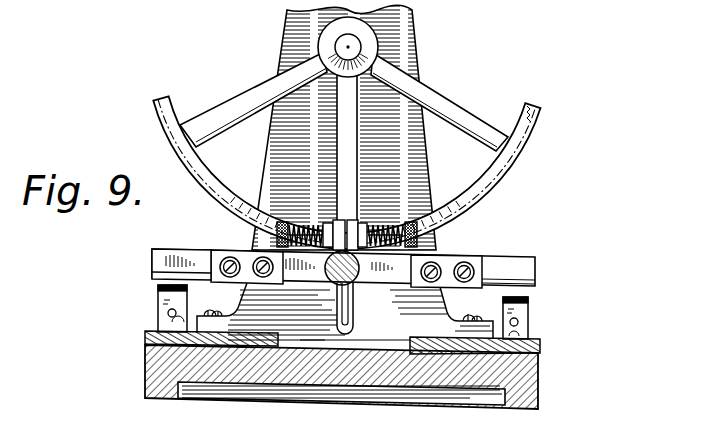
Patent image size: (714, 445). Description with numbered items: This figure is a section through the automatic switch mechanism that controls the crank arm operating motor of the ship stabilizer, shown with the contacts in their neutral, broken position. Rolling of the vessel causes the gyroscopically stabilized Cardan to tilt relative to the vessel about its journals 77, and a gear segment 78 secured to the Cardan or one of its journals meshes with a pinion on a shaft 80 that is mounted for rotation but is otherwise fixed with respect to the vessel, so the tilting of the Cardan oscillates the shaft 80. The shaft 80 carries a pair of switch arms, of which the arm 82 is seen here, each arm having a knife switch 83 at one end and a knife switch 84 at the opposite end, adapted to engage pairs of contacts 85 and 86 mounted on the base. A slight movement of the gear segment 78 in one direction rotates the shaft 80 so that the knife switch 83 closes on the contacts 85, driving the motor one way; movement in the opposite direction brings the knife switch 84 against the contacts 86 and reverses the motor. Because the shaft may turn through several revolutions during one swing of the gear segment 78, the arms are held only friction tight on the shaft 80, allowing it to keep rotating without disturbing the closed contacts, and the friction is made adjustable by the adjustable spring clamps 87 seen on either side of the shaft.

The journals 77 is at (345, 44).
The gear segment 78 is at (499, 166).
The shaft 80 is at (354, 291).
The arm 82 is at (457, 258).
The knife switch 83 is at (166, 258).
The knife switch 84 is at (521, 267).
The contacts 85 is at (162, 306).
The contacts 86 is at (523, 310).
The adjustable spring clamps 87 is at (313, 211).